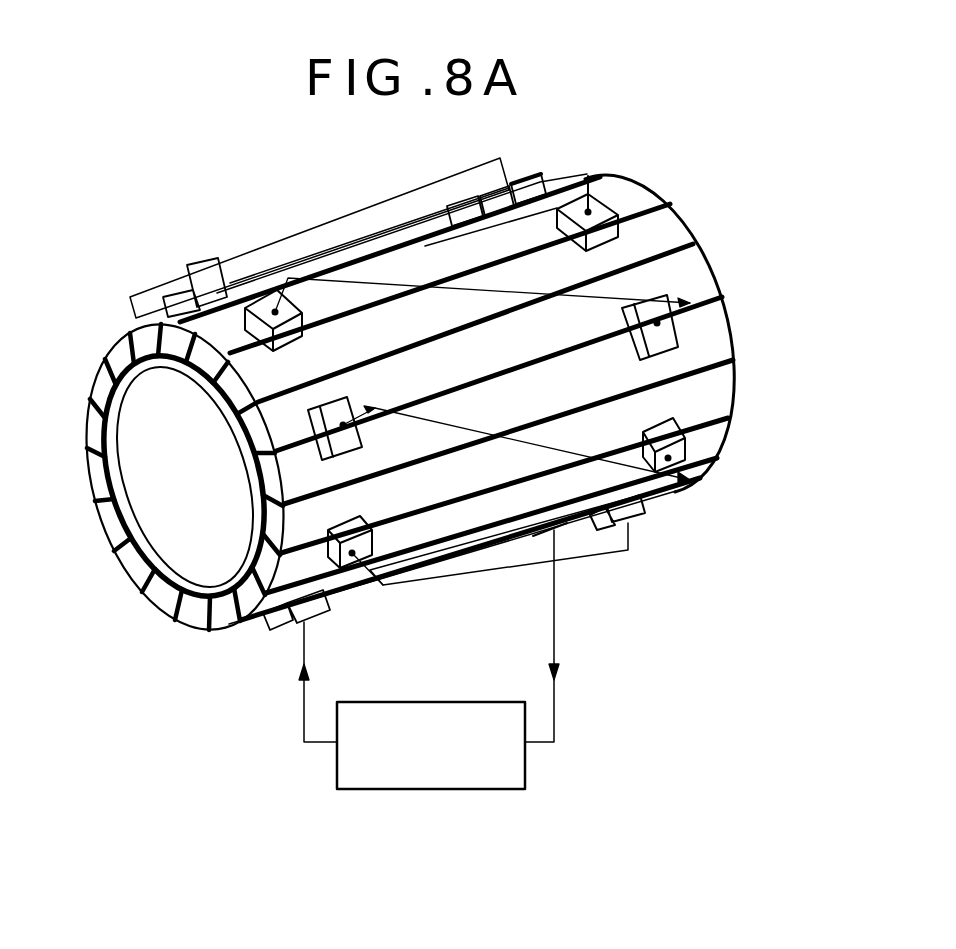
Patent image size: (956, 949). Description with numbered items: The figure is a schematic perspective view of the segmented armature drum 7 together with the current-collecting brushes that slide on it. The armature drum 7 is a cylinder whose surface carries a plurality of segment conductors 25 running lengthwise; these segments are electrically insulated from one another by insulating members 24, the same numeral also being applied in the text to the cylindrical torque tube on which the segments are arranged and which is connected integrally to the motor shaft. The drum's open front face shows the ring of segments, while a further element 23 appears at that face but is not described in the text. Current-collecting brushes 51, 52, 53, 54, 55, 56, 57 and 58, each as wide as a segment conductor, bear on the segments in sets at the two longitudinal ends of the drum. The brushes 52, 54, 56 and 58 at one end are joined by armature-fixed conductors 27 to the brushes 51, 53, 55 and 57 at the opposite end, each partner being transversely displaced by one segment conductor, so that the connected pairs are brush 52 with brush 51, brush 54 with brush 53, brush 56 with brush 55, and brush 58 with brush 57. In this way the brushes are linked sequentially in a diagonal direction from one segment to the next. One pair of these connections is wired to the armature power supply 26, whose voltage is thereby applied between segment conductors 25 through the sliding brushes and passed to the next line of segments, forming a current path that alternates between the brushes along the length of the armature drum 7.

The armature drum 7 is at (91, 350).
The armature shaft bore 23 is at (152, 477).
The insulating members 24 is at (184, 598).
The segment conductors 25 is at (668, 232).
The armature power supply 26 is at (437, 702).
The armature-fixed conductors 27 is at (594, 552).
The current-collecting brush 51 is at (218, 290).
The current-collecting brush 52 is at (592, 212).
The current-collecting brush 53 is at (296, 331).
The current-collecting brush 54 is at (672, 330).
The current-collecting brush 55 is at (357, 432).
The current-collecting brush 56 is at (670, 437).
The current-collecting brush 57 is at (363, 523).
The current-collecting brush 58 is at (636, 513).